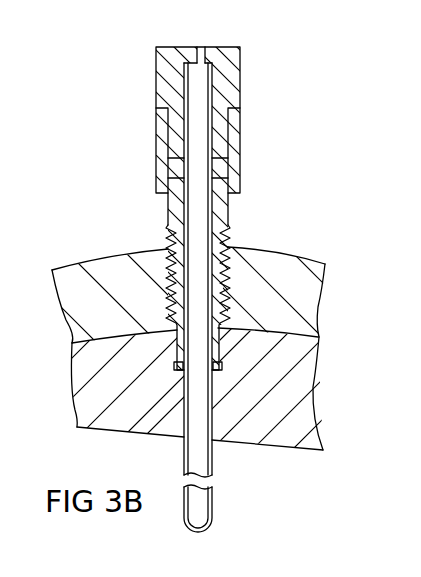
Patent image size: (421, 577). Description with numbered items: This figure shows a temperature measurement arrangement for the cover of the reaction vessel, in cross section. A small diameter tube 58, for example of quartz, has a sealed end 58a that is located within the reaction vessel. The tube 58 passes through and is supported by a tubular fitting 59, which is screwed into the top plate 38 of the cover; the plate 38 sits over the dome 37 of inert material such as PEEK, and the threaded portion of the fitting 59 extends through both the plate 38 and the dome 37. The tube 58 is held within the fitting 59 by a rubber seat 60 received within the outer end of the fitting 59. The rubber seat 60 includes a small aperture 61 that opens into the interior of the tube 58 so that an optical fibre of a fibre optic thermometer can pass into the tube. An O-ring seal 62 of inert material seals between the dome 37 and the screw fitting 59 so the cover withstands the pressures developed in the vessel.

The dome 37 is at (103, 380).
The top plate 38 is at (275, 270).
The tube 58 is at (183, 453).
The sealed end 58a is at (200, 530).
The tubular fitting 59 is at (244, 191).
The rubber seat 60 is at (207, 63).
The aperture 61 is at (200, 52).
The O-ring seal 62 is at (222, 368).